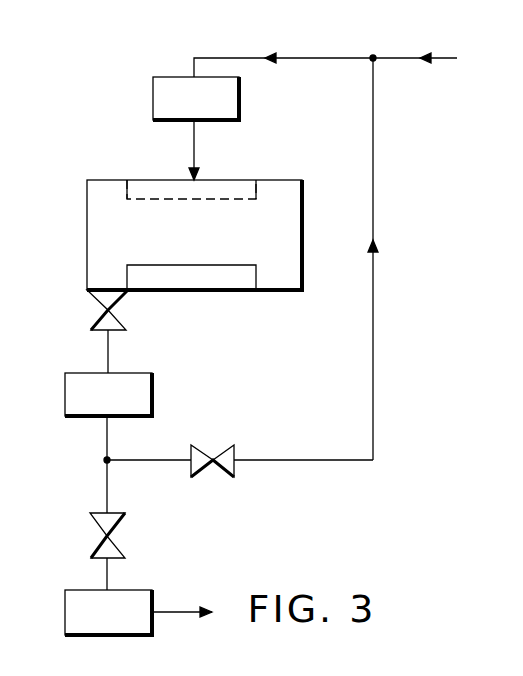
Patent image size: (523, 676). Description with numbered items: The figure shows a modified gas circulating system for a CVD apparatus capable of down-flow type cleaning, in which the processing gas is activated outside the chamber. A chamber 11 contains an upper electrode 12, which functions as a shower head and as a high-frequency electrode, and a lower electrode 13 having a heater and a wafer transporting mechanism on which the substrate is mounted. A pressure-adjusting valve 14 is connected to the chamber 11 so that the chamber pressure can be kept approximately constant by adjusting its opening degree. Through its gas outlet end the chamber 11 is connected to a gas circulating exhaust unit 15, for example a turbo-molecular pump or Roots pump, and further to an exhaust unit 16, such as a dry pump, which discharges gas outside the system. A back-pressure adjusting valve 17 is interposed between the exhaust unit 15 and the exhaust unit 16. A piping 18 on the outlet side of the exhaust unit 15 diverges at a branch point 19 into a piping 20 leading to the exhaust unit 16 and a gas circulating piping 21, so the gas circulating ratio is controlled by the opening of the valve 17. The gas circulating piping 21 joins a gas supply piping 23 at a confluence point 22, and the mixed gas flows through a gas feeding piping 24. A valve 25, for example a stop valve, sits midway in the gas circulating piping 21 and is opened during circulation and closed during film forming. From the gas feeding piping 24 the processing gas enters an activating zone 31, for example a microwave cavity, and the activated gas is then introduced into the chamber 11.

The chamber 11 is at (87, 229).
The upper electrode 12 is at (162, 192).
The lower electrode 13 is at (208, 281).
The pressure-adjusting valve 14 is at (103, 308).
The gas circulating exhaust unit 15 is at (65, 398).
The exhaust unit 16 is at (65, 612).
The back-pressure adjusting valve 17 is at (103, 522).
The piping 18 is at (107, 437).
The branch point 19 is at (107, 462).
The piping 20 is at (110, 483).
The gas circulating piping 21 is at (316, 461).
The confluence point 22 is at (374, 54).
The gas supply piping 23 is at (434, 62).
The gas feeding piping 24 is at (300, 56).
The valve 25 is at (196, 446).
The activating zone 31 is at (177, 78).